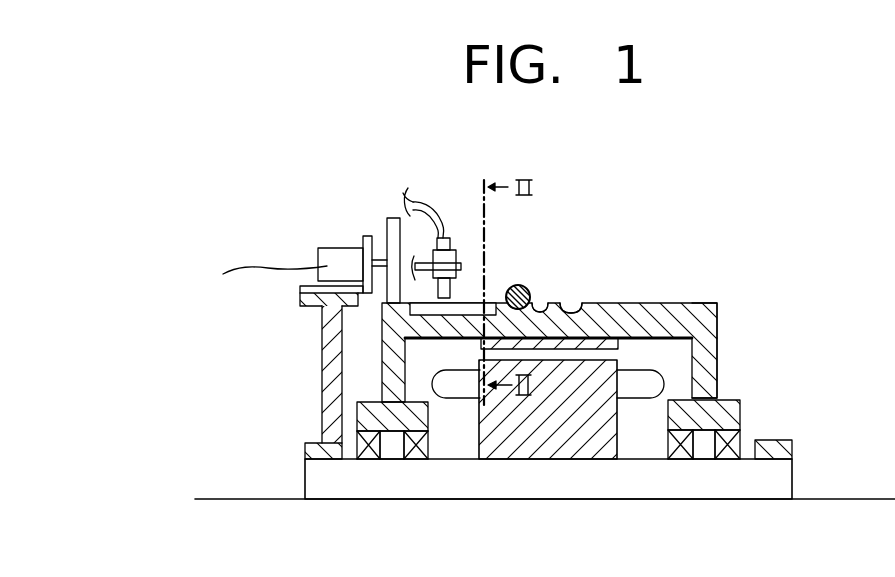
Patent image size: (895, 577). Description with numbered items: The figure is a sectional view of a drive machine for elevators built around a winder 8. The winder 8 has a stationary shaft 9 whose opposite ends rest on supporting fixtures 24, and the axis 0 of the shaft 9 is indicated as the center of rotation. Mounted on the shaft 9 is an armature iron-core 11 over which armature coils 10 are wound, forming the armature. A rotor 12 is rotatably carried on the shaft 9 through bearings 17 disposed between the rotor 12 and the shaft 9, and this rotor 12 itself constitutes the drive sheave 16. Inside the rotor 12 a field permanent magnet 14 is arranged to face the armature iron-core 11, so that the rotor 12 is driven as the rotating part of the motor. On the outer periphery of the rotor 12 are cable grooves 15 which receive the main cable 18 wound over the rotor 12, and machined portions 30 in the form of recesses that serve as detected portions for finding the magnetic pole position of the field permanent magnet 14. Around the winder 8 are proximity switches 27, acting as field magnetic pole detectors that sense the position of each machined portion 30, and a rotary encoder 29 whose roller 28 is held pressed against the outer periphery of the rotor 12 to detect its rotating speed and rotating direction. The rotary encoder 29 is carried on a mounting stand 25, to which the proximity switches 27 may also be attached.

The axis of the shaft 0 is at (838, 498).
The winder 8 is at (717, 367).
The stationary shaft 9 is at (593, 495).
The armature coils 10 is at (641, 378).
The armature iron-core 11 is at (542, 442).
The rotor 12 is at (708, 325).
The field permanent magnet 14 is at (645, 303).
The cable grooves 15 is at (548, 302).
The drive sheave 16 is at (572, 309).
The bearings 17 is at (680, 452).
The main cable 18 is at (524, 286).
The supporting fixtures 24 is at (309, 445).
The mounting stand 25 is at (323, 350).
The proximity switches 27 is at (450, 247).
The roller 28 is at (392, 217).
The rotary encoder 29 is at (327, 257).
The machined portions 30 is at (488, 298).